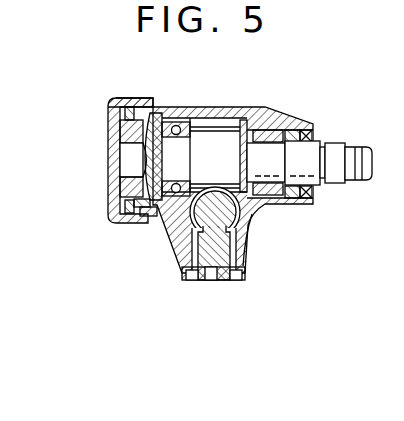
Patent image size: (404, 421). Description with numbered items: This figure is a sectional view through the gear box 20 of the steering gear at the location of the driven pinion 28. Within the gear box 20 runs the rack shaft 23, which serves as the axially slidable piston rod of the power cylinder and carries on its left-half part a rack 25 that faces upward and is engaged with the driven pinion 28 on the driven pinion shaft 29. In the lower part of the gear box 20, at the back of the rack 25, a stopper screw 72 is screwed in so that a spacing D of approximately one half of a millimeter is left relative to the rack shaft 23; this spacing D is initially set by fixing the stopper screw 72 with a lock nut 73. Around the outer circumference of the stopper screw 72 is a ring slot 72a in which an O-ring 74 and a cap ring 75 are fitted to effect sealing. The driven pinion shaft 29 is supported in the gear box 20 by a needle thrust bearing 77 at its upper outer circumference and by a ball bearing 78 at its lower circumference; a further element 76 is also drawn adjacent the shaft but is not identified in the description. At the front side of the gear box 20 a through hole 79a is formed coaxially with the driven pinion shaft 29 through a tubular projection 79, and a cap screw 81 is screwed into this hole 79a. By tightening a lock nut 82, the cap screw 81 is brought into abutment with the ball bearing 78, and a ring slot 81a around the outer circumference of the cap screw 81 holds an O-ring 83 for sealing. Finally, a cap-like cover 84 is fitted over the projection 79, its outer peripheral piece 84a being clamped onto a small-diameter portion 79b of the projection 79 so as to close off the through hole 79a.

The gear box 20 is at (225, 102).
The rack shaft 23 is at (229, 203).
The rack 25 is at (180, 232).
The driven pinion 28 is at (205, 128).
The driven pinion shaft 29 is at (351, 181).
The stopper screw 72 is at (226, 283).
The ring slot 72a is at (188, 281).
The lock nut 73 is at (186, 283).
The O-ring 74 is at (243, 268).
The cap ring 75 is at (210, 283).
The ball bearing 76 is at (286, 114).
The needle thrust bearing 77 is at (255, 130).
The ball bearing 78 is at (172, 126).
The tubular projection 79 is at (110, 207).
The through hole 79a is at (160, 220).
The small-diameter portion 79b is at (138, 218).
The cap screw 81 is at (118, 128).
The ring slot 81a is at (117, 180).
The lock nut 82 is at (120, 112).
The O-ring 83 is at (124, 144).
The cap-like cover 84 is at (118, 203).
The outer peripheral piece 84a is at (117, 106).
The spacing D is at (240, 238).